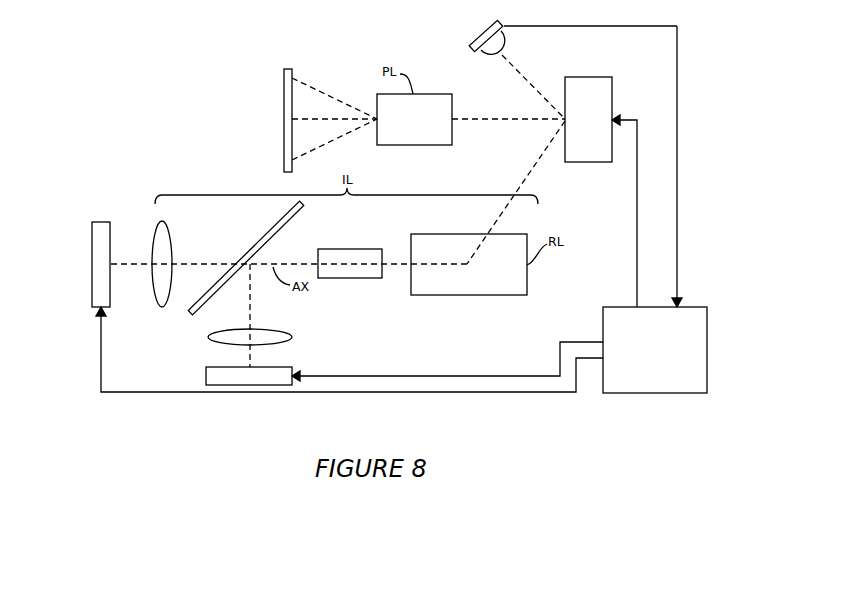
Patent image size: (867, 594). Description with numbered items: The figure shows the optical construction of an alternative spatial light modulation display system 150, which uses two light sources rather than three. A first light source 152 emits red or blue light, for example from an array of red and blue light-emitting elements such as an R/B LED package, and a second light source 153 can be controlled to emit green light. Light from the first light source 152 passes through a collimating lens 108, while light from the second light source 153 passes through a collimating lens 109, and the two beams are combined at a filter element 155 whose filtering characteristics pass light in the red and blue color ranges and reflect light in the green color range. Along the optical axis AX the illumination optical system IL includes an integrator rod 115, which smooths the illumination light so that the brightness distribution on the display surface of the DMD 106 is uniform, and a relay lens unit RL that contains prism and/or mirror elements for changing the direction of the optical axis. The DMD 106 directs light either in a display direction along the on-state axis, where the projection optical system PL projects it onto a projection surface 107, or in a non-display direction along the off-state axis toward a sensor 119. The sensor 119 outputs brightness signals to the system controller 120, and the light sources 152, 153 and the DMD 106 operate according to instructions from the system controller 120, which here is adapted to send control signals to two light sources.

The spatial light modulation display system 150 is at (337, 211).
The projection surface 107 is at (292, 70).
The DMD 106 is at (612, 82).
The sensor 119 is at (483, 32).
The first light source 152 is at (92, 250).
The collimating lens 108 is at (171, 250).
The filter element 155 is at (303, 208).
The collimating lens 109 is at (286, 334).
The second light source 153 is at (206, 370).
The integrator rod 115 is at (370, 278).
The system controller 120 is at (655, 350).